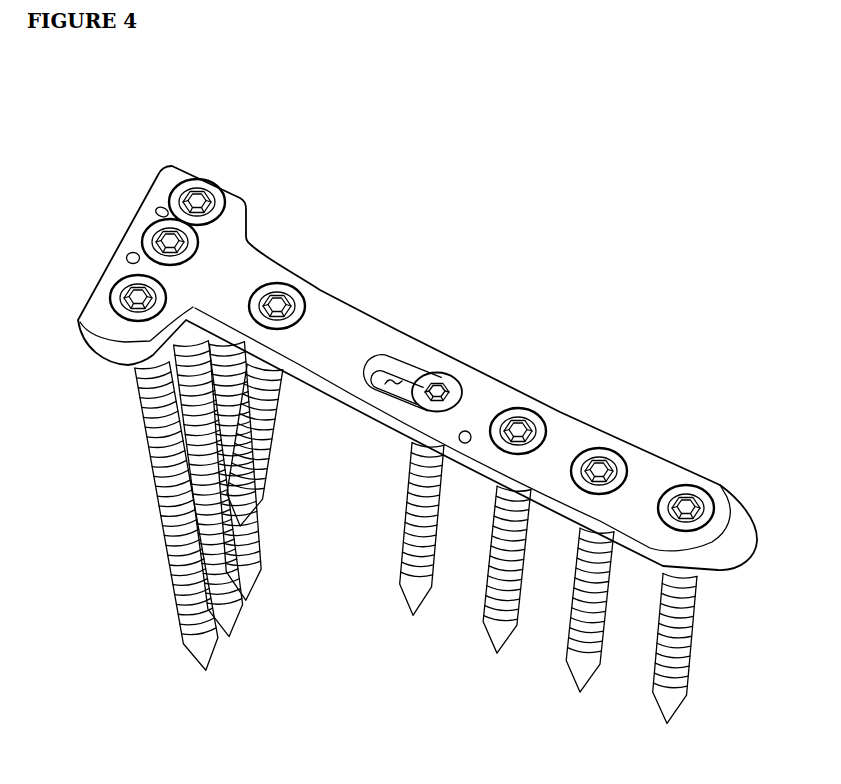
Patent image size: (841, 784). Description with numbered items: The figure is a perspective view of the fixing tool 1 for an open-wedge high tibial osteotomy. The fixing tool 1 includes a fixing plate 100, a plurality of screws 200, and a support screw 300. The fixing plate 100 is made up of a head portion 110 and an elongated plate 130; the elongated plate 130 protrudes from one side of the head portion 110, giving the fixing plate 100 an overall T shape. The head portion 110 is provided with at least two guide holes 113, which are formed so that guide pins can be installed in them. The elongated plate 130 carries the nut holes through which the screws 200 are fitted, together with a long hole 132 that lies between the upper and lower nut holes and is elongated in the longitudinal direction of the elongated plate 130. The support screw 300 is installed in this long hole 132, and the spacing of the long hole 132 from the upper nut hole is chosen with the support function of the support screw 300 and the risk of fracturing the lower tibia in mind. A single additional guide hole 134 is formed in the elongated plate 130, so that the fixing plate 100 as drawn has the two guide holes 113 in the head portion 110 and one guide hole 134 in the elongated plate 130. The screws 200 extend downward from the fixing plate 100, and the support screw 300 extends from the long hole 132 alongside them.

The fixing tool 1 is at (134, 93).
The fixing plate 100 is at (338, 143).
The head portion 110 is at (228, 227).
The guide holes 113 is at (156, 211).
The elongated plate 130 is at (403, 348).
The long hole 132 is at (393, 383).
The guide hole 134 is at (468, 432).
The screws 200 is at (258, 472).
The support screw 300 is at (420, 590).